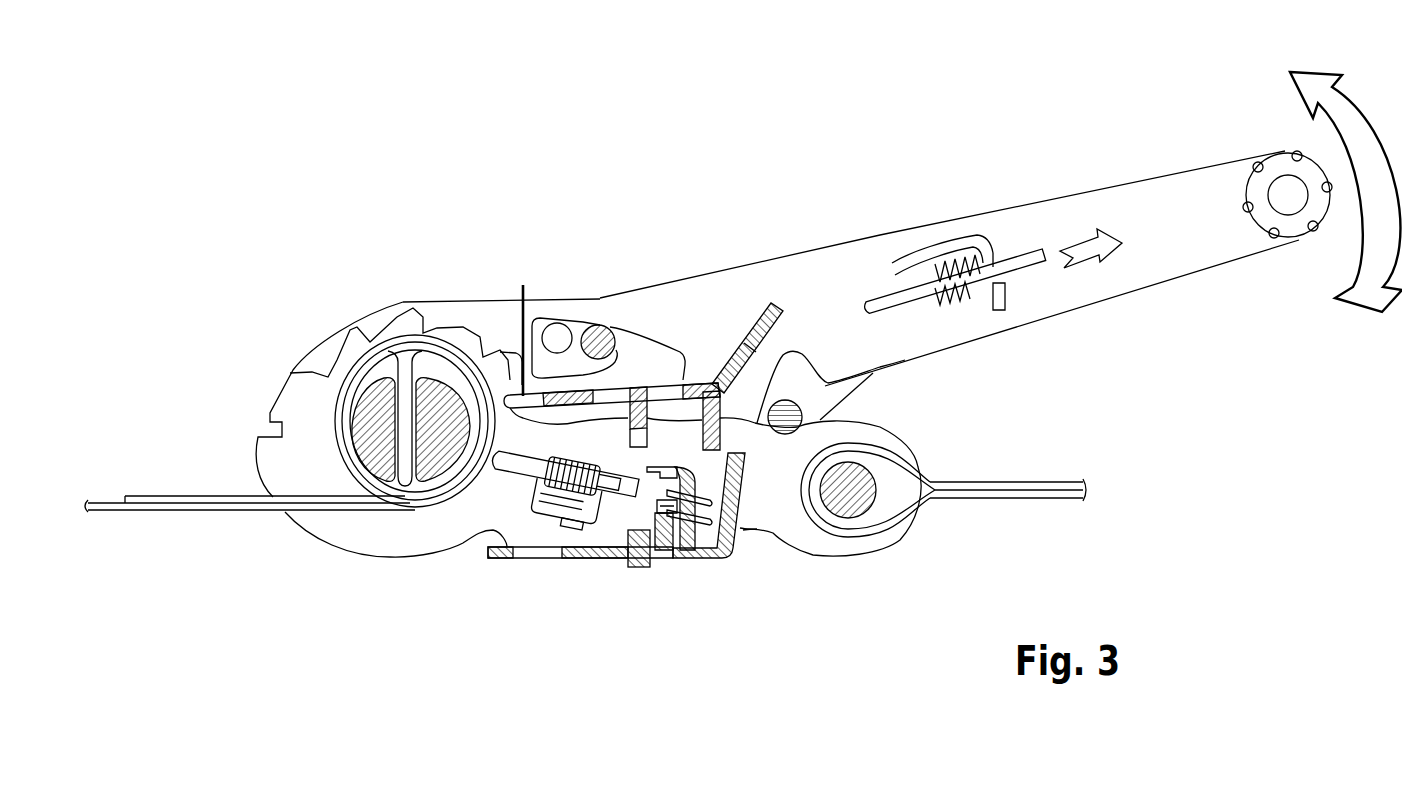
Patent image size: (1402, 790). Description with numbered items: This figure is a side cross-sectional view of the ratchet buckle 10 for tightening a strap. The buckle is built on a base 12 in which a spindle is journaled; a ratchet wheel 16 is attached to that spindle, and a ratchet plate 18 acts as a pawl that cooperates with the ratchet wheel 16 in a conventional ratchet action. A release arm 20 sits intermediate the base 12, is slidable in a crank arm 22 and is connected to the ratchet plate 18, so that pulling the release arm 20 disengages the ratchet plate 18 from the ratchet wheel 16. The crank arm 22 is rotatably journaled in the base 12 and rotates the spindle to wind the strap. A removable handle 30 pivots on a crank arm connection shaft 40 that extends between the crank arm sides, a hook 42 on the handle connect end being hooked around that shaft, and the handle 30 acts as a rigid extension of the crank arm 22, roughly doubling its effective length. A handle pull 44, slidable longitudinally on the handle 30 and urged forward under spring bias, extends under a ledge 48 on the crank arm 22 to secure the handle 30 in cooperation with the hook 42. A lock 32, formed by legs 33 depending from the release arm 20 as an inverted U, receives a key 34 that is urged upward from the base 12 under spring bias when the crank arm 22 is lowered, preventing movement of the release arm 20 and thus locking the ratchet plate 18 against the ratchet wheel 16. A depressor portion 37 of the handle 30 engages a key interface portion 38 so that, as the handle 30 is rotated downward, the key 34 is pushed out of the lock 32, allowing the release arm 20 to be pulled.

The ratchet buckle 10 is at (400, 235).
The base 12 is at (822, 540).
The ratchet wheel 16 is at (347, 340).
The ratchet plate 18 is at (514, 321).
The release arm 20 is at (760, 318).
The crank arm 22 is at (470, 313).
The handle 30 is at (873, 245).
The lock 32 is at (703, 383).
The legs 33 is at (668, 380).
The key 34 is at (665, 555).
The depressor portion 37 is at (757, 405).
The key interface portion 38 is at (655, 487).
The crank arm connection shaft 40 is at (588, 327).
The hook 42 is at (617, 322).
The handle pull 44 is at (922, 292).
The ledge 48 is at (893, 376).